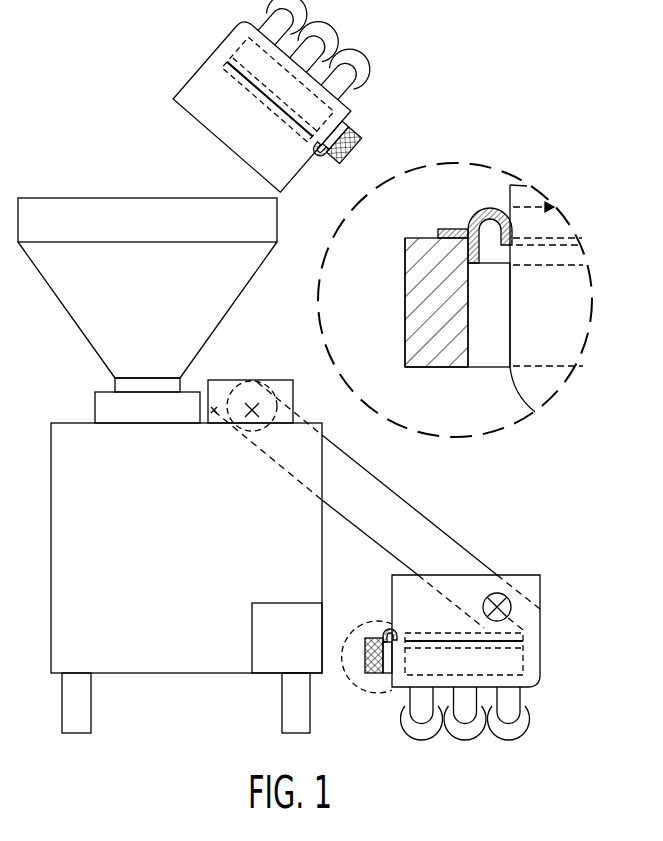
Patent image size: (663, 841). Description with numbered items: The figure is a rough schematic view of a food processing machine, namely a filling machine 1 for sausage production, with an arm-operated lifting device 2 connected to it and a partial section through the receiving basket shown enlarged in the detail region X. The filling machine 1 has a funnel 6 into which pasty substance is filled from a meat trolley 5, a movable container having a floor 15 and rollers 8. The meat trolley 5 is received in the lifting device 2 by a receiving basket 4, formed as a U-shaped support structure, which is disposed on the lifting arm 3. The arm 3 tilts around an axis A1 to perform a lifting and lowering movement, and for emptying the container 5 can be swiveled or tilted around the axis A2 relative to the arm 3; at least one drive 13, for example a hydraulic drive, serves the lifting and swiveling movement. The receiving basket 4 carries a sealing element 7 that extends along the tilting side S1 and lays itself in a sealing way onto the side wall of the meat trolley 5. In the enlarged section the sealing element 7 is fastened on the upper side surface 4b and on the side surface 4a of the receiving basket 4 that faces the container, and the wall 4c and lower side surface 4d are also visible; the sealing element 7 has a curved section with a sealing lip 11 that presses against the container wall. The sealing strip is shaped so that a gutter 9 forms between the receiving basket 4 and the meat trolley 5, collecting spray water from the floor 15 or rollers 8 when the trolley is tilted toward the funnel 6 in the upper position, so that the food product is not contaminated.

The filling machine 1 is at (78, 189).
The lifting device 2 is at (425, 517).
The lifting arm 3 is at (389, 520).
The receiving basket 4 is at (386, 676).
The side surface facing the container 4a is at (468, 302).
The upper side surface 4b is at (418, 231).
The closure element side 4c is at (405, 305).
The lower side surface 4d is at (455, 368).
The meat trolley 5 is at (227, 134).
The funnel 6 is at (62, 306).
The sealing element 7 is at (388, 627).
The rollers 8 is at (421, 738).
The gutter 9 is at (510, 185).
The sealing lip 11 is at (515, 237).
The drive 13 is at (302, 651).
The floor 15 is at (493, 692).
The axis A1 is at (253, 404).
The axis A2 is at (497, 593).
The tilting side S1 is at (311, 166).
The detail region X is at (455, 428).